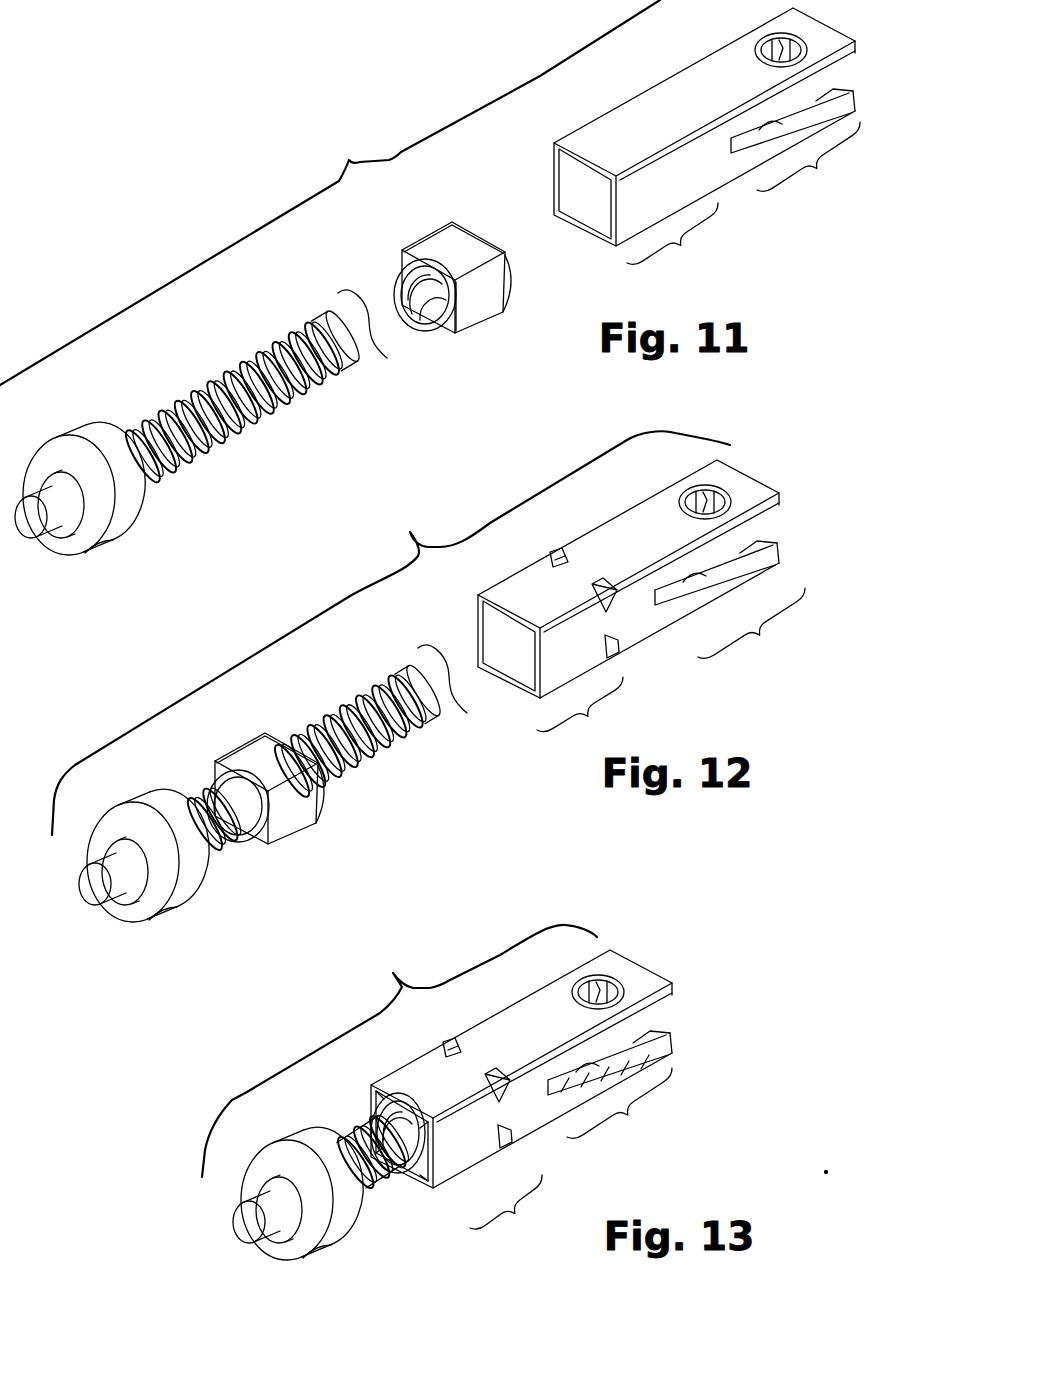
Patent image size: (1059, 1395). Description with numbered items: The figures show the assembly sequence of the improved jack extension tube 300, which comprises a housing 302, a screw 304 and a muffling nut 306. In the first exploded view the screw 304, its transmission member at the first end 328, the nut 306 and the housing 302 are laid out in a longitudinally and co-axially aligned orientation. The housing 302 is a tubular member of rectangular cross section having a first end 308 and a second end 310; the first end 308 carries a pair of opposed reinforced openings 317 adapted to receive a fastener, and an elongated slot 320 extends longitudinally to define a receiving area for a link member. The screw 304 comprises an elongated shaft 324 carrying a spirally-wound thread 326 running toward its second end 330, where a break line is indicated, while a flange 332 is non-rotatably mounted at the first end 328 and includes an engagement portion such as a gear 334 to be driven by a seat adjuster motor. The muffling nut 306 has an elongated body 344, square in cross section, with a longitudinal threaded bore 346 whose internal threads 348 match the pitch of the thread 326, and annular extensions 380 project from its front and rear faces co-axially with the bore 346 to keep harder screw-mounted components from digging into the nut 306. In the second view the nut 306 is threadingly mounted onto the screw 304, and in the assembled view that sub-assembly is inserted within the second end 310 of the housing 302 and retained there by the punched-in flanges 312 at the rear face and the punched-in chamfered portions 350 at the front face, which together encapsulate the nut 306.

In FIG. 11, the jack extension tube 300 is at (330, 192).
In FIG. 12, the jack extension tube 300 is at (391, 633).
In FIG. 13, the jack extension tube 300 is at (399, 1051).
In FIG. 11, the housing 302 is at (618, 98).
In FIG. 12, the housing 302 is at (612, 508).
In FIG. 13, the housing 302 is at (530, 972).
In FIG. 11, the screw 304 is at (238, 343).
In FIG. 12, the screw 304 is at (320, 687).
In FIG. 13, the screw 304 is at (356, 1109).
In FIG. 11, the muffling nut 306 is at (519, 300).
In FIG. 12, the muffling nut 306 is at (328, 825).
In FIG. 11, the first end 308 is at (799, 148).
In FIG. 12, the first end 308 is at (734, 607).
In FIG. 13, the first end 308 is at (614, 1092).
In FIG. 11, the second end 310 is at (676, 242).
In FIG. 12, the second end 310 is at (584, 712).
In FIG. 13, the second end 310 is at (510, 1211).
In FIG. 12, the inwardly-extending flange 312 is at (603, 580).
In FIG. 13, the inwardly-extending flange 312 is at (490, 1075).
In FIG. 11, the reinforced openings 317 is at (772, 52).
In FIG. 12, the reinforced openings 317 is at (703, 500).
In FIG. 13, the reinforced openings 317 is at (600, 985).
In FIG. 11, the elongated slot 320 is at (762, 130).
In FIG. 12, the elongated slot 320 is at (742, 552).
In FIG. 13, the elongated slot 320 is at (645, 1042).
In FIG. 11, the elongated shaft 324 is at (298, 303).
In FIG. 12, the elongated shaft 324 is at (360, 680).
In FIG. 13, the elongated shaft 324 is at (398, 1173).
In FIG. 11, the spirally-wound thread 326 is at (238, 428).
In FIG. 12, the spirally-wound thread 326 is at (380, 752).
In FIG. 13, the spirally-wound thread 326 is at (383, 1177).
In FIG. 11, the first end 328 is at (72, 415).
In FIG. 12, the first end 328 is at (159, 782).
In FIG. 13, the first end 328 is at (312, 1114).
In FIG. 11, the second end 330 is at (368, 307).
In FIG. 12, the second end 330 is at (442, 662).
In FIG. 11, the flange 332 is at (70, 516).
In FIG. 12, the flange 332 is at (134, 885).
In FIG. 13, the flange 332 is at (280, 1188).
In FIG. 11, the gear 334 is at (138, 508).
In FIG. 12, the gear 334 is at (198, 885).
In FIG. 13, the gear 334 is at (350, 1220).
In FIG. 11, the elongated body 344 is at (437, 240).
In FIG. 12, the elongated body 344 is at (270, 737).
In FIG. 11, the threaded bore 346 is at (462, 330).
In FIG. 11, the internal threads 348 is at (430, 308).
In FIG. 13, the chamfered portions 350 is at (420, 1100).
In FIG. 11, the extensions 380 is at (401, 252).
In FIG. 12, the extensions 380 is at (292, 735).
In FIG. 13, the extensions 380 is at (413, 1183).